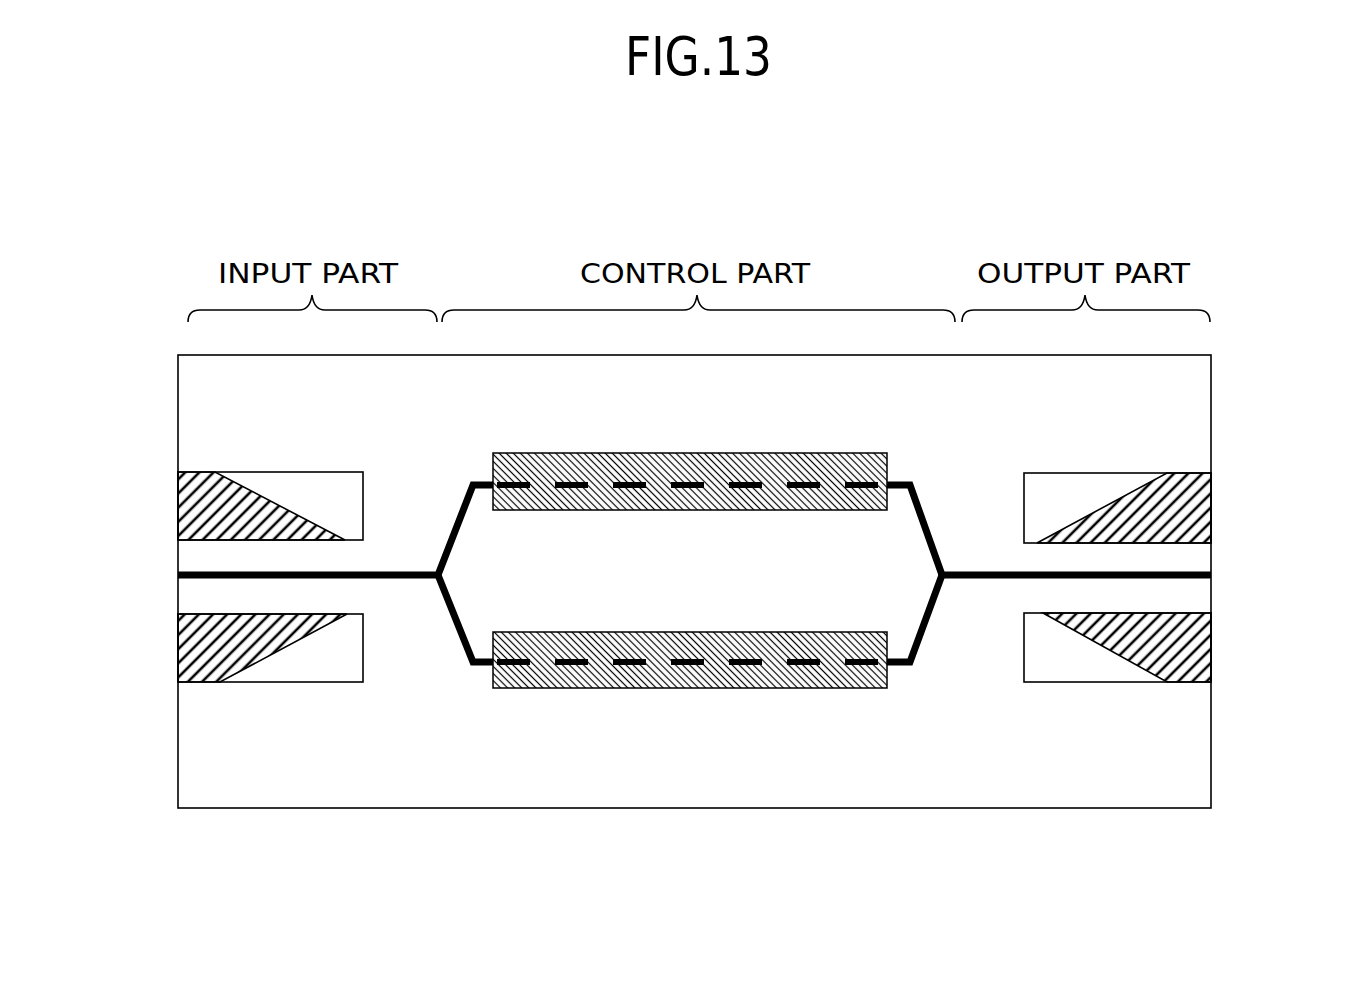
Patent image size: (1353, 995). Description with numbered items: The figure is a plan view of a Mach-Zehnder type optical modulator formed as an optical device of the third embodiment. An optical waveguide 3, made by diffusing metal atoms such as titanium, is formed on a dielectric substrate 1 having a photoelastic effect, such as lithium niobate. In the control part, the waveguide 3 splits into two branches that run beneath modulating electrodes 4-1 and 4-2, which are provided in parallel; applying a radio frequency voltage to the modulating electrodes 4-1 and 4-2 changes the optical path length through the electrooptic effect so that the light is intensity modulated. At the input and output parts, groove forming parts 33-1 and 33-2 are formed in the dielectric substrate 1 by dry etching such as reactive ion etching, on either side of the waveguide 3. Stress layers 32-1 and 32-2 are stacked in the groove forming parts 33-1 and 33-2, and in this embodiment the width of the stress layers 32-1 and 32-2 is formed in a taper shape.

The dielectric substrate 1 is at (1200, 776).
The waveguide (optical waveguide) 3 is at (437, 578).
The modulating electrode 4-1 is at (818, 453).
The modulating electrode 4-2 is at (818, 688).
The stress layer 32-1 is at (182, 510).
The stress layer 32-2 is at (182, 643).
The groove forming part 33-1 is at (313, 472).
The groove forming part 33-2 is at (313, 682).